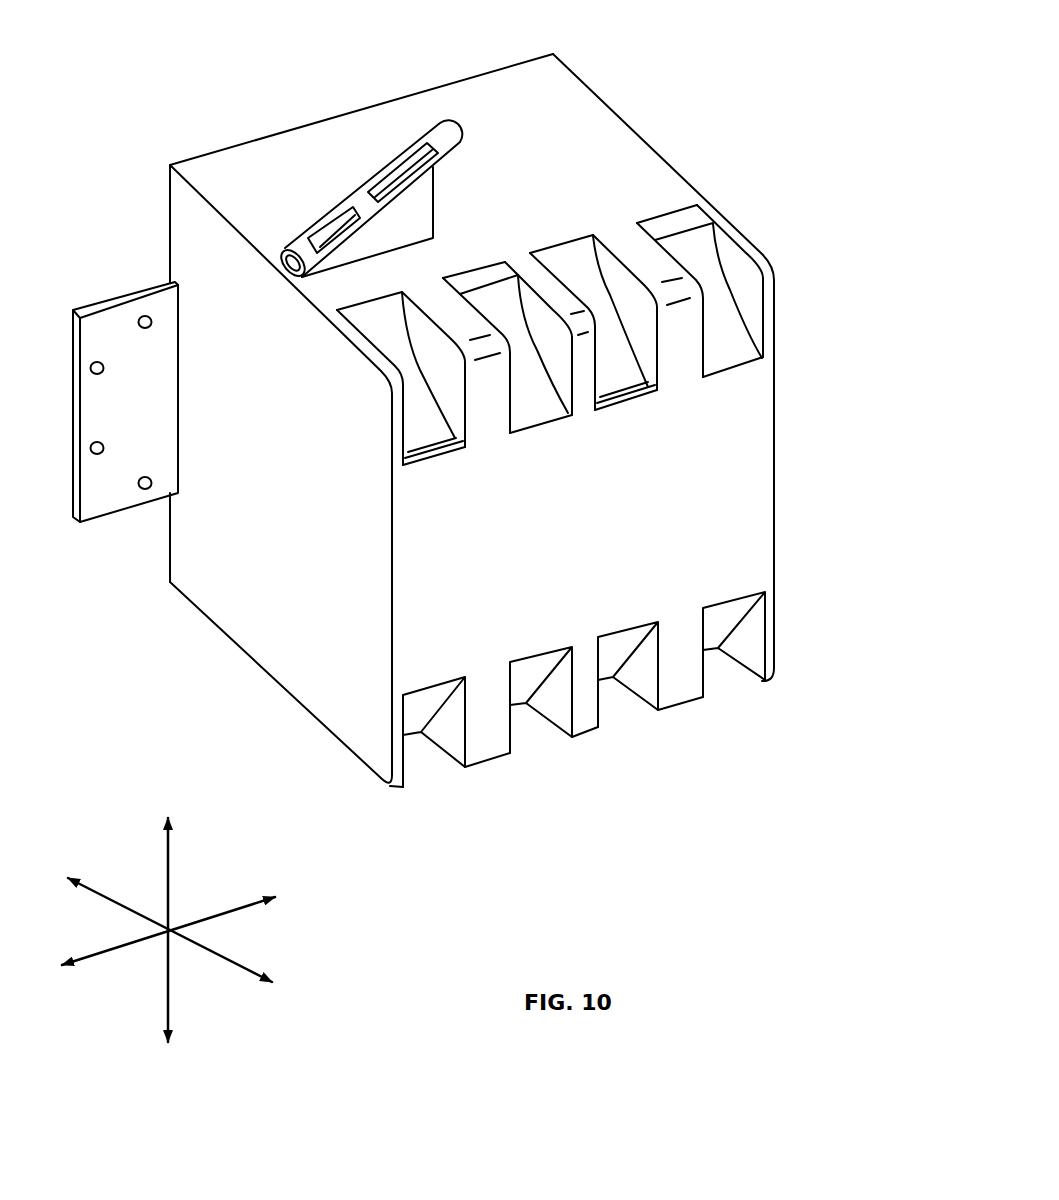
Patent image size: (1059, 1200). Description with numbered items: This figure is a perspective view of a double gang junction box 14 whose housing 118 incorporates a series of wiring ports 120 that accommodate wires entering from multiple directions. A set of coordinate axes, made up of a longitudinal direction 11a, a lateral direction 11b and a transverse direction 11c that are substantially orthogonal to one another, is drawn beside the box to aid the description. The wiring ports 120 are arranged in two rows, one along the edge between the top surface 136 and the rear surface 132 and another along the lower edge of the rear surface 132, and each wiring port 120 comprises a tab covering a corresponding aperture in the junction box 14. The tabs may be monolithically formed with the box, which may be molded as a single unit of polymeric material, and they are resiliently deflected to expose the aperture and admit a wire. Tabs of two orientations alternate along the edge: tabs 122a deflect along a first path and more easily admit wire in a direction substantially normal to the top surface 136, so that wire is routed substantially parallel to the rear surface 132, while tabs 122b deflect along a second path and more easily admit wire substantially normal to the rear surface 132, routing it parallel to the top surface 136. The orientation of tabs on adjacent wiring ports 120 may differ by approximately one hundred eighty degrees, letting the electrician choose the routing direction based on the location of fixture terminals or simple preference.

The junction box 14 is at (651, 79).
The housing 118 is at (628, 155).
The top surface 136 is at (549, 137).
The rear surface 132 is at (728, 514).
The wiring port 120 is at (738, 382).
The tab 122a is at (383, 332).
The tab 122b is at (499, 300).
The longitudinal direction 11a is at (170, 853).
The lateral direction 11b is at (238, 907).
The transverse direction 11c is at (237, 970).